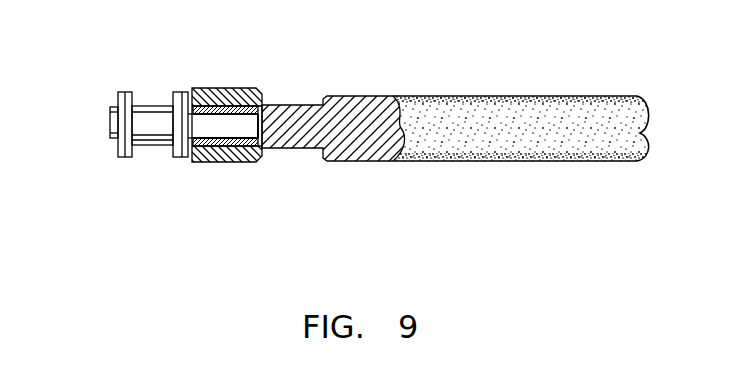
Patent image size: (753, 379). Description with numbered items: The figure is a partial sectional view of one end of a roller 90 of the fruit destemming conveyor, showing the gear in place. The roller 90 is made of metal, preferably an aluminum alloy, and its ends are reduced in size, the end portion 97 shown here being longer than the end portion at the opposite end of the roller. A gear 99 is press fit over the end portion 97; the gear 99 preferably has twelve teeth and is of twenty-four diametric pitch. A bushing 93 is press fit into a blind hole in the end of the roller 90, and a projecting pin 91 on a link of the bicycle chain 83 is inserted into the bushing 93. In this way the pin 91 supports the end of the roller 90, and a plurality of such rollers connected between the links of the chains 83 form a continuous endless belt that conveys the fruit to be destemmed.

The bicycle chain 83 is at (150, 100).
The roller 90 is at (498, 163).
The projecting pin 91 is at (214, 125).
The bushing 93 is at (223, 107).
The end portion 97 is at (294, 107).
The gear 99 is at (210, 97).